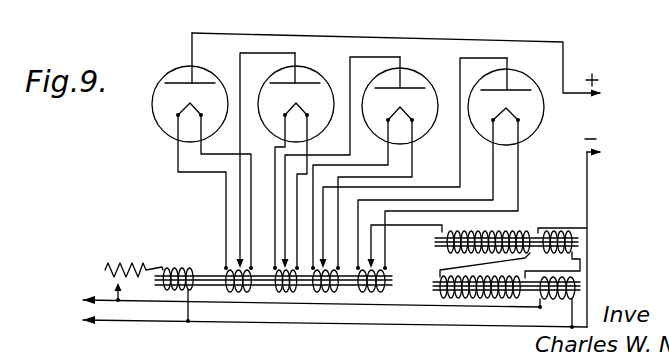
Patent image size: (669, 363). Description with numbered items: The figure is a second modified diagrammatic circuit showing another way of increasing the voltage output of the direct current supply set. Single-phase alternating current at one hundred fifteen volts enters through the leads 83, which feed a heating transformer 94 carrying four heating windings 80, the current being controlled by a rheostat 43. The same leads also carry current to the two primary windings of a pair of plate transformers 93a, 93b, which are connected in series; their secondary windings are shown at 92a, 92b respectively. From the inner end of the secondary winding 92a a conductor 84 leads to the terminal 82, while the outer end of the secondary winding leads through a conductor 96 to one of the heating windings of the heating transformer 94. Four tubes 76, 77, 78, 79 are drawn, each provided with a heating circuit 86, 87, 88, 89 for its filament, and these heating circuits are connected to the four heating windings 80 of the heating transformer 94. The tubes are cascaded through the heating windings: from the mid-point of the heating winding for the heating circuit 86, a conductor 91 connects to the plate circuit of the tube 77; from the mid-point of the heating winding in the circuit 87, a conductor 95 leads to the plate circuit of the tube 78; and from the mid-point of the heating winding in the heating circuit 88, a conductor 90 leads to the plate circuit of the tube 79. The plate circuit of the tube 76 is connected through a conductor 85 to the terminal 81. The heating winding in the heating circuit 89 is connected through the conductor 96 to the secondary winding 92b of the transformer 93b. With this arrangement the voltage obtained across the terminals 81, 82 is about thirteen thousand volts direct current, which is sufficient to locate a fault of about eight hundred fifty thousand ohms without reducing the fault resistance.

The rheostat 43 is at (142, 238).
The tube 76 is at (153, 109).
The tube 77 is at (325, 97).
The tube 78 is at (424, 105).
The tube 79 is at (545, 117).
The heating windings 80 is at (300, 288).
The terminal 81 is at (600, 91).
The terminal 82 is at (603, 152).
The leads 83 is at (80, 319).
The conductor 84 is at (588, 198).
The conductor 85 is at (208, 34).
The heating circuit 86 is at (212, 174).
The heating circuit 87 is at (297, 212).
The heating circuit 88 is at (408, 158).
The heating circuit 89 is at (520, 168).
The conductor 90 is at (486, 41).
The conductor 91 is at (241, 64).
The secondary winding 92a is at (470, 297).
The secondary winding 92b is at (452, 247).
The plate transformer 93a is at (575, 284).
The plate transformer 93b is at (574, 234).
The heating transformer 94 is at (177, 289).
The conductor 95 is at (417, 21).
The conductor 96 is at (393, 226).